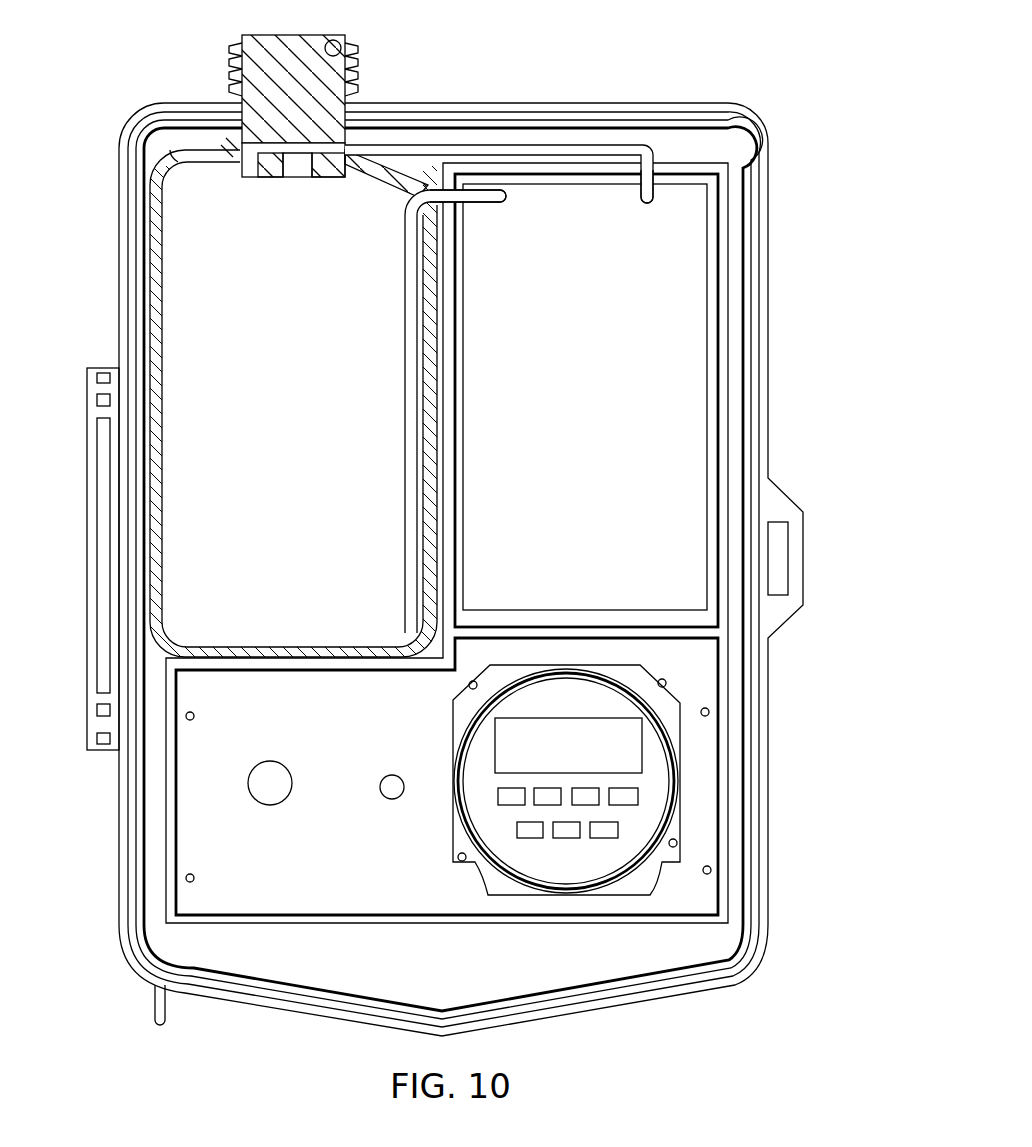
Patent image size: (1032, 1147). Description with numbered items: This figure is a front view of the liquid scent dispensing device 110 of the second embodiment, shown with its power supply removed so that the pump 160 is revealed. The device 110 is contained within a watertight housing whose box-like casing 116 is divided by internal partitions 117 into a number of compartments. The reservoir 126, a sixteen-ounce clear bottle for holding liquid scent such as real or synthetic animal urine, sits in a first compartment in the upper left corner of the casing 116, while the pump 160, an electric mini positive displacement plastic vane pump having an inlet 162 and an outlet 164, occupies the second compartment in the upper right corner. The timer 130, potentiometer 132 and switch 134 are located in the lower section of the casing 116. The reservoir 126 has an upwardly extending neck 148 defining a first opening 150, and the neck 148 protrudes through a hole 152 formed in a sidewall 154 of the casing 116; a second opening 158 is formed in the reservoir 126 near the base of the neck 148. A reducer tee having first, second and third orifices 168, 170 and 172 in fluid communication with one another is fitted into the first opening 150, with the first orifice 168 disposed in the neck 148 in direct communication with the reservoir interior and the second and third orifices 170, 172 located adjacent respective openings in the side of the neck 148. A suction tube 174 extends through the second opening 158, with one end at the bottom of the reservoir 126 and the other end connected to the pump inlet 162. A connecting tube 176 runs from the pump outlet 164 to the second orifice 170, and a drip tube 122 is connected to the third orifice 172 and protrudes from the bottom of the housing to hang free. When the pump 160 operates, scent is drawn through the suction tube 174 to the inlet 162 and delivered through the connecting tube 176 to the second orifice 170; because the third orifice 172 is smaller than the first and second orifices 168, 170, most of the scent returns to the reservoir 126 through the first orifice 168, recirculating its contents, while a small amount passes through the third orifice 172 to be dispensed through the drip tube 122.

The liquid scent dispensing device 110 is at (848, 176).
The casing 116 is at (768, 343).
The internal partitions 117 is at (455, 462).
The drip tube 122 is at (173, 152).
The reservoir 126 is at (305, 383).
The timer 130 is at (680, 767).
The potentiometer 132 is at (278, 806).
The switch 134 is at (390, 800).
The neck 148 is at (228, 90).
The first opening 150 is at (338, 42).
The hole 152 is at (297, 73).
The sidewall 154 is at (497, 105).
The second opening 158 is at (412, 192).
The pump 160 is at (595, 371).
The inlet 162 is at (483, 203).
The outlet 164 is at (640, 208).
The first orifice 168 is at (292, 178).
The second orifice 170 is at (340, 178).
The third orifice 172 is at (232, 152).
The suction tube 174 is at (405, 447).
The connecting tube 176 is at (578, 147).